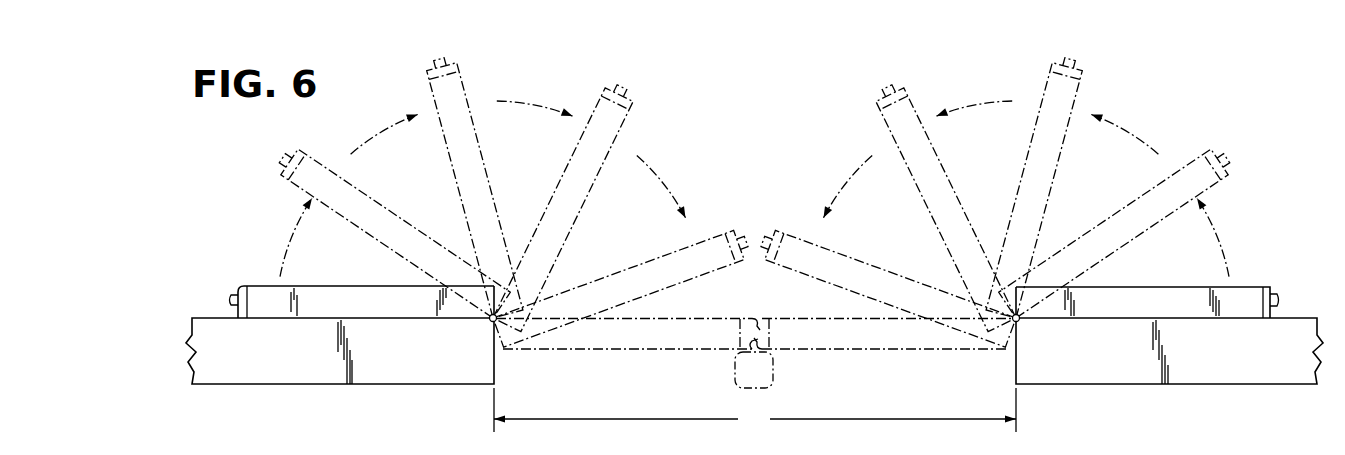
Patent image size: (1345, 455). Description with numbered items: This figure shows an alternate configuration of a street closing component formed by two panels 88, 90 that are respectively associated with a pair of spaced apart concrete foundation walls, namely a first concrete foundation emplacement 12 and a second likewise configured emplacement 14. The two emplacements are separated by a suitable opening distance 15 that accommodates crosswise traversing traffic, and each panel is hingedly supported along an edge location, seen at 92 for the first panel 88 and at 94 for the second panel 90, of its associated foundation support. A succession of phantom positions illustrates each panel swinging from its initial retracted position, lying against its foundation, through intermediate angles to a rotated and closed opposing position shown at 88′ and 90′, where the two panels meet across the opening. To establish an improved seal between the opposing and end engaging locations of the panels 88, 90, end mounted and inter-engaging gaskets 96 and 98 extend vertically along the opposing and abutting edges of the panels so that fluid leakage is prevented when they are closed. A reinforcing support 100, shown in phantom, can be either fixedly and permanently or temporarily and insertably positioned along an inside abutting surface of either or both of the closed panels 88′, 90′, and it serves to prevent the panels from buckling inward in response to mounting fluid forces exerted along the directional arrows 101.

The first concrete foundation emplacement 12 is at (315, 353).
The second concrete foundation emplacement 14 is at (1218, 353).
The opening distance 15 is at (755, 410).
The panel 88 is at (265, 298).
The panel 90 is at (1130, 298).
The hinged edge location 92 is at (490, 321).
The hinged edge location 94 is at (1019, 321).
The end mounted inter-engaging gasket 96 is at (231, 300).
The end mounted inter-engaging gasket 98 is at (1272, 292).
The reinforcing support 100 is at (733, 371).
The directional arrows 101 is at (753, 283).
The rotated closed position of panel 88′ is at (689, 316).
The rotated closed position of panel 90′ is at (848, 315).